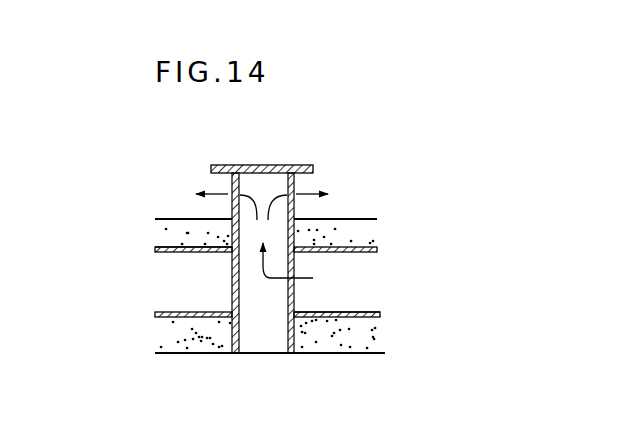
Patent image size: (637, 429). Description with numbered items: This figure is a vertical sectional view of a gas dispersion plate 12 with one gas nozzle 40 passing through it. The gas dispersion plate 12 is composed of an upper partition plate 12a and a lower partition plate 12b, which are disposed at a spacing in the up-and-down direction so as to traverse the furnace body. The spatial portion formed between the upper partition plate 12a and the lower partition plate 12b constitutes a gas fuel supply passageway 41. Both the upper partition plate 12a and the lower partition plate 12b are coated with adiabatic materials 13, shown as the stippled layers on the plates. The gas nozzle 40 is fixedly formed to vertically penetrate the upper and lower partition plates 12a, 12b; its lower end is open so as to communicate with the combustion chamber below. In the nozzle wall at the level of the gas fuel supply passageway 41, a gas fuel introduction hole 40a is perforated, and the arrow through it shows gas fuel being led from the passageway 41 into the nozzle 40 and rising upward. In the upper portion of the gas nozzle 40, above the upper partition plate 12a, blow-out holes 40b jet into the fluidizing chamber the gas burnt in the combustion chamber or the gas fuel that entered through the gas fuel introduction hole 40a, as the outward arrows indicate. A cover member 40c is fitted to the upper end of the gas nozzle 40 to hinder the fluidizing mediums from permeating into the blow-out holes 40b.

The gas dispersion plate 12 is at (407, 293).
The upper partition plate 12a is at (165, 256).
The lower partition plate 12b is at (173, 312).
The adiabatic material 13 is at (365, 227).
The gas nozzle 40 is at (233, 276).
The gas fuel introduction hole 40a is at (287, 283).
The blow-out hole 40b is at (230, 190).
The cover member 40c is at (260, 165).
The gas fuel supply passageway 41 is at (191, 298).